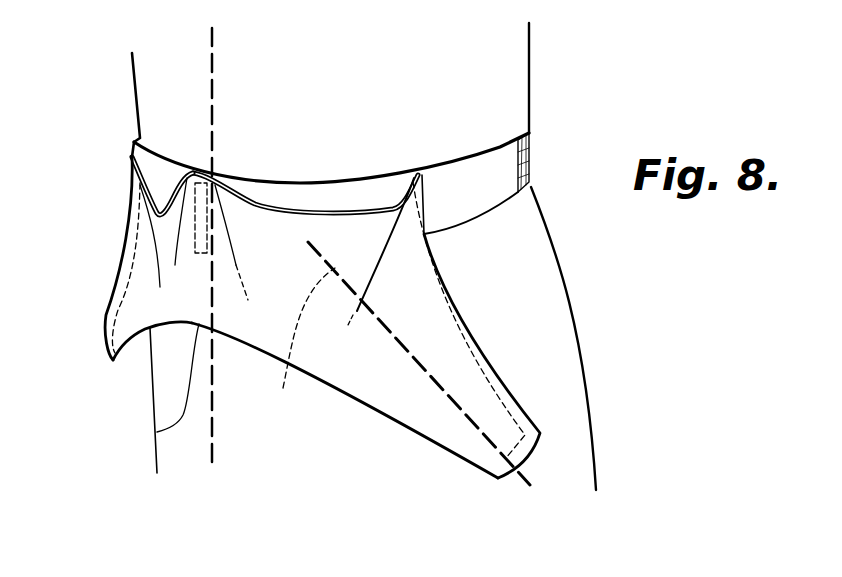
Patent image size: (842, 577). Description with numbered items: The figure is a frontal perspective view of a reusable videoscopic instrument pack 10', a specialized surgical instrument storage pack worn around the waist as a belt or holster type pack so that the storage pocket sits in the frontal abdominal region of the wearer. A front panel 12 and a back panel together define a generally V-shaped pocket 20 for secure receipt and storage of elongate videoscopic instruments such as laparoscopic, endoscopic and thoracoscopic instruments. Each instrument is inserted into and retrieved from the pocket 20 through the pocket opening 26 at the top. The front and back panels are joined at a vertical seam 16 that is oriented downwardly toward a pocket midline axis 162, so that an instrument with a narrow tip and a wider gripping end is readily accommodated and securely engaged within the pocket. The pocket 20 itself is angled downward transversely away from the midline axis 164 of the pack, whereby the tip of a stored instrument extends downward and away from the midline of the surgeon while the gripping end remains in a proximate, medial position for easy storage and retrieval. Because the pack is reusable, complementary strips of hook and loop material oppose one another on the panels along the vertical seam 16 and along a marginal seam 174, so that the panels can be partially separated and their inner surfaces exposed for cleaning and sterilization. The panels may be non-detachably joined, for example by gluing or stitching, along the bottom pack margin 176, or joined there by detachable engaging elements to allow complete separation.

The videoscopic instrument pack 10' is at (424, 345).
The front panel 12 is at (332, 370).
The vertical seam 16 is at (201, 253).
The pocket 20 is at (312, 205).
The pocket opening 26 is at (164, 188).
The pocket midline axis 162 is at (283, 388).
The midline axis of the pack 164 is at (213, 67).
The marginal seam 174 is at (120, 282).
The bottom pack margin 176 is at (157, 432).